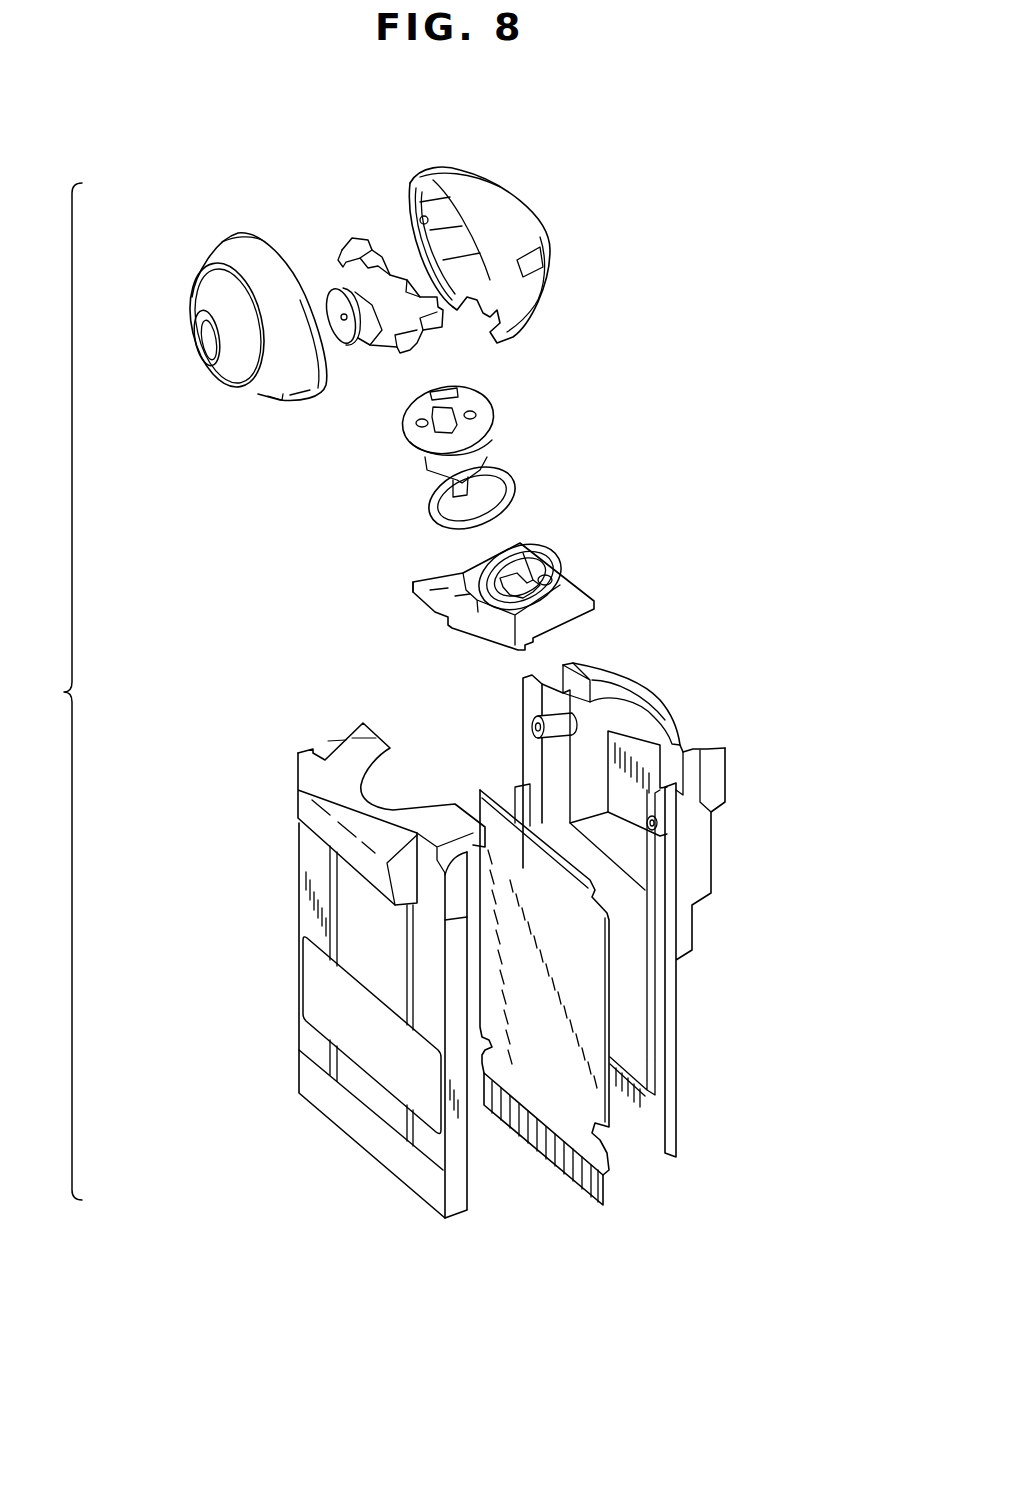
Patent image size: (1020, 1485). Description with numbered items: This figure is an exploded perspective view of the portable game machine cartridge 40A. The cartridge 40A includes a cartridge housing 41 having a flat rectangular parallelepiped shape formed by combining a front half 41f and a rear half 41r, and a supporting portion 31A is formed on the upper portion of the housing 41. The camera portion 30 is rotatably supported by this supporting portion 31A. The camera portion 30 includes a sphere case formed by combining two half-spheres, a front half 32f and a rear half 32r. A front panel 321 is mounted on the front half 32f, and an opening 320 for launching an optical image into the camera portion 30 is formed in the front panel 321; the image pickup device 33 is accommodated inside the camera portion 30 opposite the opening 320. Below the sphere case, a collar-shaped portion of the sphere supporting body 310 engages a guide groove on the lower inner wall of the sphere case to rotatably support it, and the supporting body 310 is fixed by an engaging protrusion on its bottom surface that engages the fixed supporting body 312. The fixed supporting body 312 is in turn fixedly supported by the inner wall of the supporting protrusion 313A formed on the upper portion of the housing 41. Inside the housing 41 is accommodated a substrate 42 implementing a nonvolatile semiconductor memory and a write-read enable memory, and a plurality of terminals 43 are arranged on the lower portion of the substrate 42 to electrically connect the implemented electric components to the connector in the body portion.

The portable game machine cartridge 40A is at (637, 97).
The camera portion 30 is at (479, 155).
The front half 32f is at (236, 247).
The rear half 32r is at (517, 229).
The image pickup device 33 is at (338, 262).
The front panel 321 is at (210, 295).
The opening 320 is at (205, 345).
The supporting portion 31A is at (727, 482).
The sphere supporting body 310 is at (487, 425).
The fixed supporting body 312 is at (575, 585).
The supporting protrusion 313A is at (672, 710).
The cartridge housing 41 is at (750, 787).
The front half 41f is at (462, 1200).
The rear half 41r is at (672, 1140).
The substrate 42 is at (650, 1120).
The terminals 43 is at (533, 1140).